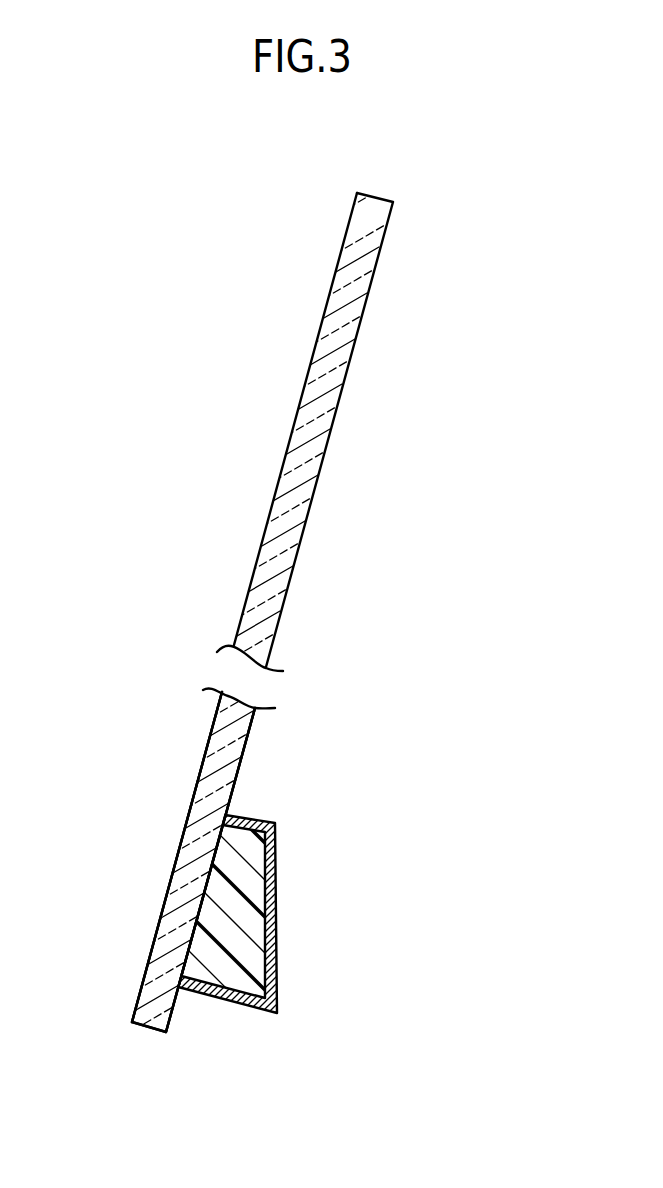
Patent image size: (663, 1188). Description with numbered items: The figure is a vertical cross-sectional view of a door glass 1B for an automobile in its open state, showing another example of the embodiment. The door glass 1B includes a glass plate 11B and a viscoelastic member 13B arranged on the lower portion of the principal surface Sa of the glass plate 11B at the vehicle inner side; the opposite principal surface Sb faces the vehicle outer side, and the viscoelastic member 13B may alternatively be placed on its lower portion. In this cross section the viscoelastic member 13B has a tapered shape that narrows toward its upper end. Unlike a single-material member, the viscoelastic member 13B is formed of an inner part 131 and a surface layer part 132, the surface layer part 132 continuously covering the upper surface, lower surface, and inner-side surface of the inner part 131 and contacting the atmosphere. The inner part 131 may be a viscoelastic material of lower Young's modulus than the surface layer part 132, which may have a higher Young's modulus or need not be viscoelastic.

The door glass 1B is at (238, 428).
The glass plate 11B is at (185, 858).
The principal surface Sa is at (252, 728).
The principal surface Sb is at (203, 760).
The viscoelastic member 13B is at (279, 900).
The inner part 131 is at (252, 937).
The surface layer part 132 is at (278, 965).